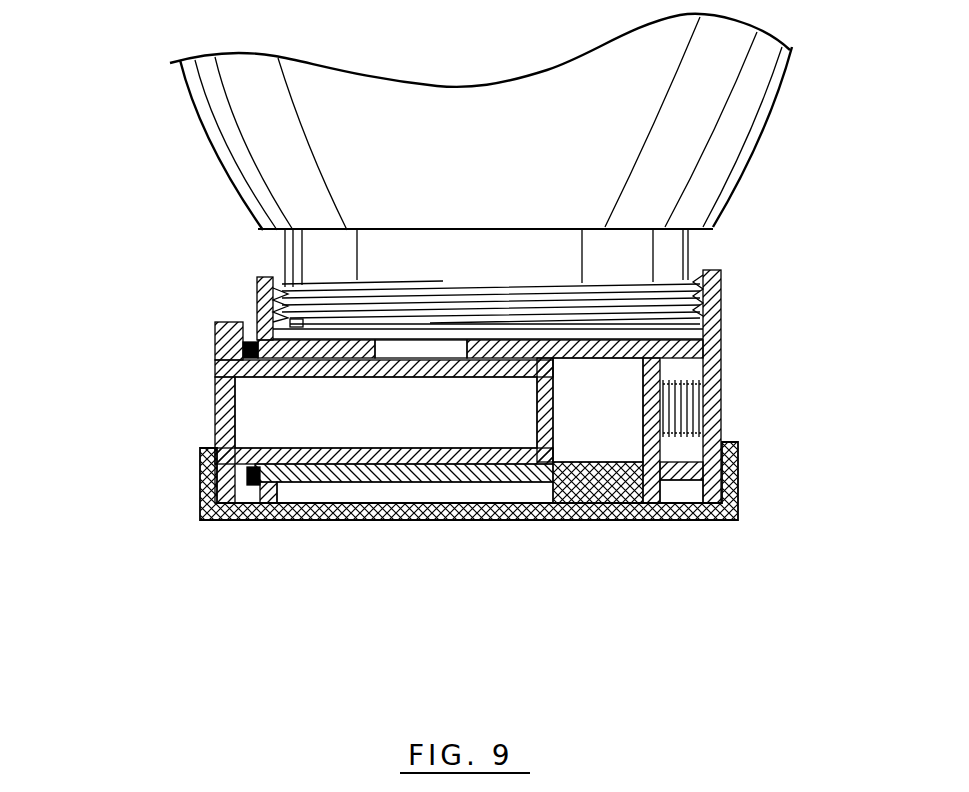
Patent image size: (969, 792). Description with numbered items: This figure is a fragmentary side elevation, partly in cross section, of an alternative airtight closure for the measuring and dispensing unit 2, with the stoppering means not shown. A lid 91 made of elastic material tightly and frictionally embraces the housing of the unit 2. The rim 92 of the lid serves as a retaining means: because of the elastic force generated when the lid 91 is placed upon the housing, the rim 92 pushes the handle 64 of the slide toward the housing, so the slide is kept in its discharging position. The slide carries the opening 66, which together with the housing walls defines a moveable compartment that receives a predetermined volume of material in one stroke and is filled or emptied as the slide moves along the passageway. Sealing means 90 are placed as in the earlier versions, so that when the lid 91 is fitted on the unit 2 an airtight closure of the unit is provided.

The measuring and dispensing unit 2 is at (720, 317).
The handle 64 is at (210, 322).
The opening 66 is at (595, 392).
The sealing means 90 is at (215, 368).
The lid 91 is at (407, 520).
The rim 92 is at (625, 520).